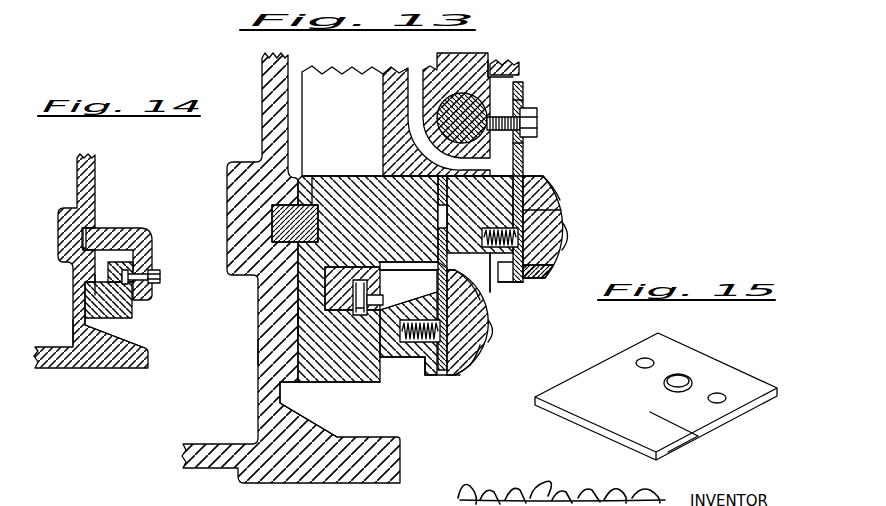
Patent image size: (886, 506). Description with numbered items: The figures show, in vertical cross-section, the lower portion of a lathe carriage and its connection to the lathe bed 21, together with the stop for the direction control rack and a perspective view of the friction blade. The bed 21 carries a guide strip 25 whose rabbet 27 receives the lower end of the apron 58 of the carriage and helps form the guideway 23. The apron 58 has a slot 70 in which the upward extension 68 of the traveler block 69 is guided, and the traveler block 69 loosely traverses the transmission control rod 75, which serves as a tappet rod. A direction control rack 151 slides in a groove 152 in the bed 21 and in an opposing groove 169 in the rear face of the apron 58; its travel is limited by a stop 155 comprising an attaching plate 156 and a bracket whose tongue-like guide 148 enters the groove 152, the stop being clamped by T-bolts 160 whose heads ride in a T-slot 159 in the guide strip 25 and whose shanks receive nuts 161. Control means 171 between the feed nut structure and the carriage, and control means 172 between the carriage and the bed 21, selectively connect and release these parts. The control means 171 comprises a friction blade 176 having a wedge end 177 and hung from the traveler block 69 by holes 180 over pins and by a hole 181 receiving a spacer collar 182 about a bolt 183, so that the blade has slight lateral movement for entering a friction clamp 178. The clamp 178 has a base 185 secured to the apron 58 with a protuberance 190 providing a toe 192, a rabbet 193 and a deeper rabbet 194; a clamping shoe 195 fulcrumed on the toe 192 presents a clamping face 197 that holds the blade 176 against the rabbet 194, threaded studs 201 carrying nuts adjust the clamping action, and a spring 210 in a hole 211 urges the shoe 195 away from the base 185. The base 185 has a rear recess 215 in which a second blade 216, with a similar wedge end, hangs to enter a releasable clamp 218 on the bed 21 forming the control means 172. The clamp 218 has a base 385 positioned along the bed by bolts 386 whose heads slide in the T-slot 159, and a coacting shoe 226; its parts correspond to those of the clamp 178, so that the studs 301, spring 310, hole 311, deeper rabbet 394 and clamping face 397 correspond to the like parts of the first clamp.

In FIG. 13, the bed 21 is at (258, 378).
In FIG. 14, the bed 21 is at (78, 310).
In FIG. 13, the guideway 23 is at (254, 356).
In FIG. 14, the guideway 23 is at (70, 335).
In FIG. 13, the guide strip 25 is at (313, 378).
In FIG. 14, the guide strip 25 is at (110, 318).
In FIG. 13, the rabbet 27 is at (298, 321).
In FIG. 14, the rabbet 27 is at (95, 286).
In FIG. 13, the apron 58 is at (364, 72).
In FIG. 13, the upward extension 68 is at (477, 51).
In FIG. 13, the traveler block 69 is at (505, 78).
In FIG. 13, the slot 70 is at (500, 67).
In FIG. 13, the transmission control rod 75 is at (423, 118).
In FIG. 14, the guide 148 is at (100, 231).
In FIG. 13, the rack 151 is at (313, 180).
In FIG. 13, the groove 152 is at (300, 204).
In FIG. 14, the groove 152 is at (83, 236).
In FIG. 14, the stop 155 is at (140, 230).
In FIG. 14, the attaching plate 156 is at (150, 292).
In FIG. 13, the T-slot 159 is at (356, 316).
In FIG. 14, the T-slot 159 is at (136, 296).
In FIG. 14, the T-bolt 160 is at (160, 276).
In FIG. 14, the nut 161 is at (150, 271).
In FIG. 13, the groove 169 is at (318, 204).
In FIG. 13, the control means 171 is at (534, 173).
In FIG. 13, the control means 172 is at (454, 385).
In FIG. 13, the friction blade 176 is at (524, 90).
In FIG. 15, the friction blade 176 is at (702, 354).
In FIG. 15, the wedge end 177 is at (669, 452).
In FIG. 13, the friction clamp 178 is at (562, 199).
In FIG. 15, the holes 180 is at (651, 360).
In FIG. 13, the hole 181 is at (523, 143).
In FIG. 15, the hole 181 is at (663, 385).
In FIG. 13, the spacer collar 182 is at (523, 107).
In FIG. 13, the bolt 183 is at (537, 122).
In FIG. 13, the base 185 is at (452, 203).
In FIG. 13, the protuberance 190 is at (520, 284).
In FIG. 13, the toe 192 is at (547, 277).
In FIG. 13, the rabbet 193 is at (557, 264).
In FIG. 13, the deeper rabbet 194 is at (506, 197).
In FIG. 13, the clamping shoe 195 is at (558, 184).
In FIG. 13, the clamping face 197 is at (561, 210).
In FIG. 13, the threaded stud 201 is at (571, 236).
In FIG. 13, the spring 210 is at (519, 236).
In FIG. 13, the hole 211 is at (489, 279).
In FIG. 13, the rear recess 215 is at (448, 180).
In FIG. 13, the blade 216 is at (447, 265).
In FIG. 13, the releasable clamp 218 is at (486, 357).
In FIG. 13, the shoe 226 is at (467, 367).
In FIG. 13, the threaded stud 301 is at (491, 333).
In FIG. 13, the spring 310 is at (443, 328).
In FIG. 13, the hole 311 is at (434, 366).
In FIG. 13, the base 385 is at (400, 359).
In FIG. 13, the bolts 386 is at (389, 257).
In FIG. 13, the deeper rabbet 394 is at (437, 284).
In FIG. 13, the clamping face 397 is at (481, 304).